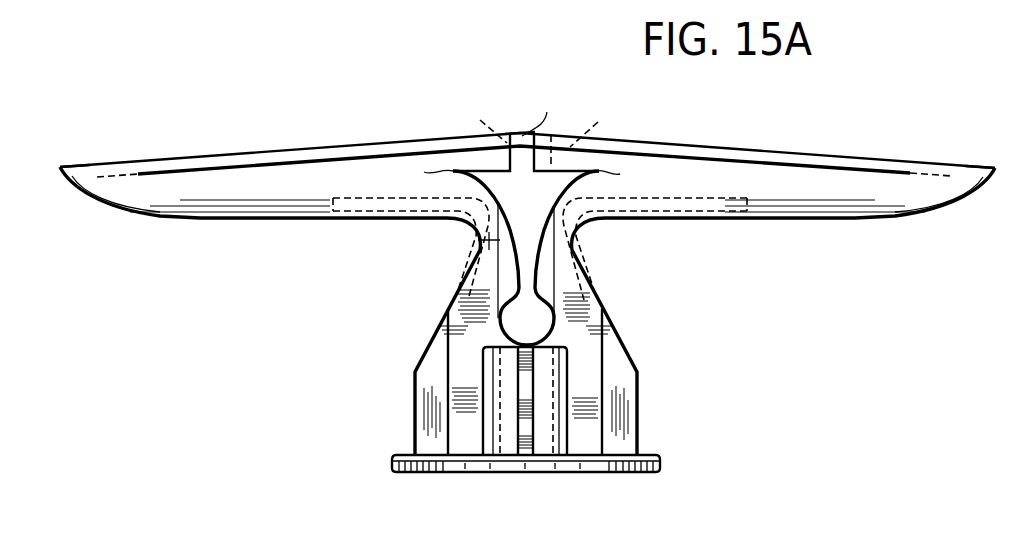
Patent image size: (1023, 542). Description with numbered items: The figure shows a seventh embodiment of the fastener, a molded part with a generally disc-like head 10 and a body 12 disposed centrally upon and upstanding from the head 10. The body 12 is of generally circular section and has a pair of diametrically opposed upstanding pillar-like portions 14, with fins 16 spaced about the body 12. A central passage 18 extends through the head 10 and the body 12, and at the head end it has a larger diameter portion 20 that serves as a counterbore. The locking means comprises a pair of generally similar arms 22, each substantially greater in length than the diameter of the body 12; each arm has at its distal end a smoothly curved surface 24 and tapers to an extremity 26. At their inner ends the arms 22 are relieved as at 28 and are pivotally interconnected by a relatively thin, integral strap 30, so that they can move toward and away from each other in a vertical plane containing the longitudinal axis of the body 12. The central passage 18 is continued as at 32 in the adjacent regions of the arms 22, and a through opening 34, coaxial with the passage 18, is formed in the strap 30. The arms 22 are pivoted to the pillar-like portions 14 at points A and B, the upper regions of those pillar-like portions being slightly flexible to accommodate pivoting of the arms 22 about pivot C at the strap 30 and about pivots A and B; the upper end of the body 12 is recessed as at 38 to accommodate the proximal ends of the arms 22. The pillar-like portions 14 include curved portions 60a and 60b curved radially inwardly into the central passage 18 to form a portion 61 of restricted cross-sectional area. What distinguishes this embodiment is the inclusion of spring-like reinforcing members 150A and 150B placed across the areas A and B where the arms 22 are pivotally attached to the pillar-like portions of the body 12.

The head 10 is at (407, 456).
The body 12 is at (607, 372).
The pillar-like portions 14 is at (467, 340).
The fins 16 is at (427, 408).
The central passage 18 is at (500, 396).
The larger diameter portion 20 is at (493, 464).
The arms 22 is at (236, 152).
The smoothly curved surface 24 is at (108, 208).
The extremity 26 is at (60, 167).
The relief 28 is at (508, 172).
The strap 30 is at (518, 133).
The passage continuation 32 is at (589, 123).
The through opening 34 is at (477, 120).
The recess 38 is at (530, 317).
The portion of restricted cross-sectional area 61 is at (483, 233).
The curved portion 60a is at (548, 238).
The curved portion 60b is at (482, 246).
The spring-like reinforcing member 150A is at (714, 208).
The spring-like reinforcing member 150B is at (388, 208).
The pivot point A is at (617, 172).
The pivot point B is at (429, 170).
The pivot C is at (540, 113).